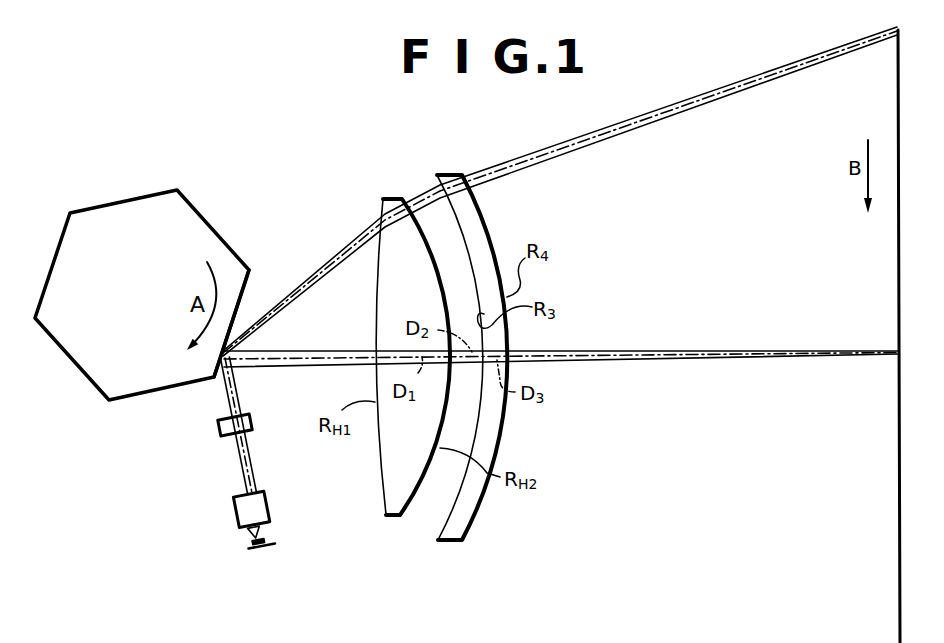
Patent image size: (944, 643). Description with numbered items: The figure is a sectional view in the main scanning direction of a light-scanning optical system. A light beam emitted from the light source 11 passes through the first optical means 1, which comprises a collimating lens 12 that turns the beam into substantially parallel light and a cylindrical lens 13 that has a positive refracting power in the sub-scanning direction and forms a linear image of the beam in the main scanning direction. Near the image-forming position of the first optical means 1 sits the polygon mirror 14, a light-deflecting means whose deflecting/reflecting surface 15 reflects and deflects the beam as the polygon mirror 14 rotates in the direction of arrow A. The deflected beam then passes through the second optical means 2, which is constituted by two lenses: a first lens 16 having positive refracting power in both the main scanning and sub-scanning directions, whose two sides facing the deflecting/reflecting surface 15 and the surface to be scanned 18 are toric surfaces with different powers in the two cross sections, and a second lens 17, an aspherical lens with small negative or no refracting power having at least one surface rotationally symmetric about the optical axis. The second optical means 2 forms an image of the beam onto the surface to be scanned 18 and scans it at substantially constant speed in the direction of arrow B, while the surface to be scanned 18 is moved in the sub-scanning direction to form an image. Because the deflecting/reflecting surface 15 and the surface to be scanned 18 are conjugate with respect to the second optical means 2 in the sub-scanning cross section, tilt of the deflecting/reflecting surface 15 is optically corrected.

The first optical means 1 is at (172, 433).
The second optical means 2 is at (467, 565).
The light source 11 is at (250, 543).
The collimating lens 12 is at (237, 513).
The cylindrical lens 13 is at (220, 435).
The polygon mirror 14 is at (90, 350).
The deflecting/reflecting surface 15 is at (248, 287).
The first lens 16 is at (385, 492).
The second lens 17 is at (452, 533).
The surface to be scanned 18 is at (898, 442).